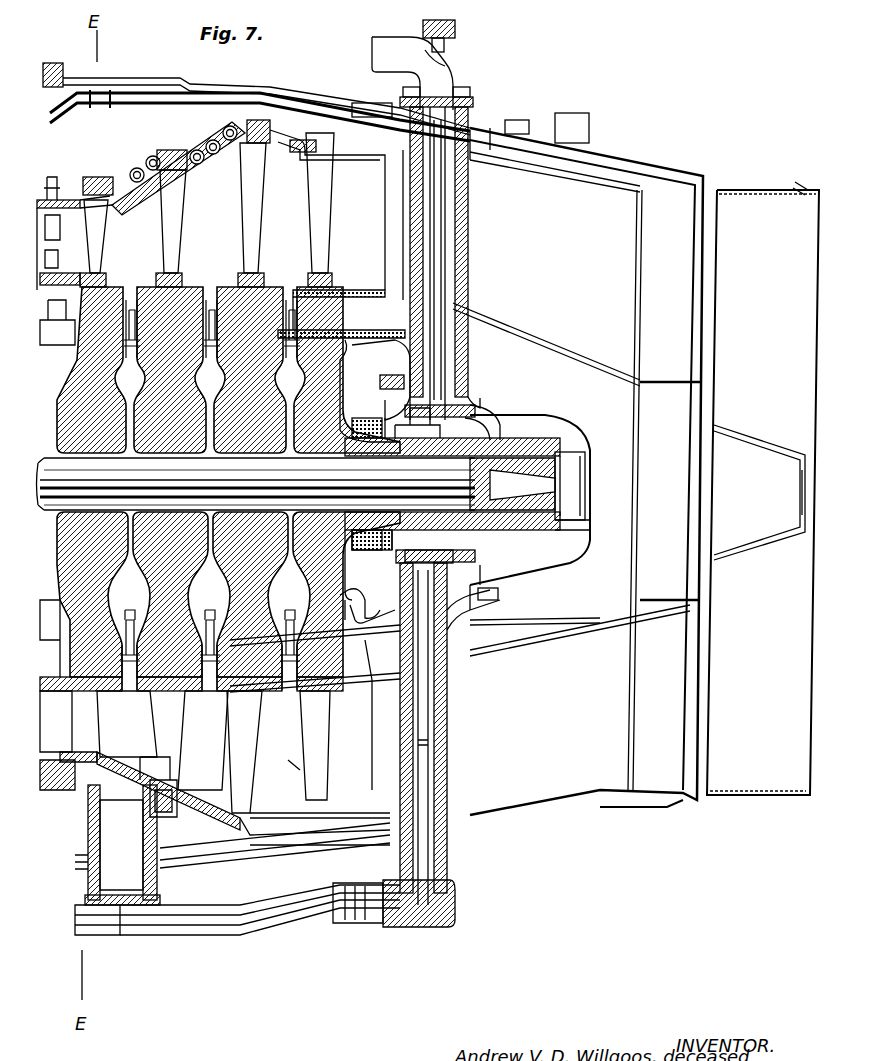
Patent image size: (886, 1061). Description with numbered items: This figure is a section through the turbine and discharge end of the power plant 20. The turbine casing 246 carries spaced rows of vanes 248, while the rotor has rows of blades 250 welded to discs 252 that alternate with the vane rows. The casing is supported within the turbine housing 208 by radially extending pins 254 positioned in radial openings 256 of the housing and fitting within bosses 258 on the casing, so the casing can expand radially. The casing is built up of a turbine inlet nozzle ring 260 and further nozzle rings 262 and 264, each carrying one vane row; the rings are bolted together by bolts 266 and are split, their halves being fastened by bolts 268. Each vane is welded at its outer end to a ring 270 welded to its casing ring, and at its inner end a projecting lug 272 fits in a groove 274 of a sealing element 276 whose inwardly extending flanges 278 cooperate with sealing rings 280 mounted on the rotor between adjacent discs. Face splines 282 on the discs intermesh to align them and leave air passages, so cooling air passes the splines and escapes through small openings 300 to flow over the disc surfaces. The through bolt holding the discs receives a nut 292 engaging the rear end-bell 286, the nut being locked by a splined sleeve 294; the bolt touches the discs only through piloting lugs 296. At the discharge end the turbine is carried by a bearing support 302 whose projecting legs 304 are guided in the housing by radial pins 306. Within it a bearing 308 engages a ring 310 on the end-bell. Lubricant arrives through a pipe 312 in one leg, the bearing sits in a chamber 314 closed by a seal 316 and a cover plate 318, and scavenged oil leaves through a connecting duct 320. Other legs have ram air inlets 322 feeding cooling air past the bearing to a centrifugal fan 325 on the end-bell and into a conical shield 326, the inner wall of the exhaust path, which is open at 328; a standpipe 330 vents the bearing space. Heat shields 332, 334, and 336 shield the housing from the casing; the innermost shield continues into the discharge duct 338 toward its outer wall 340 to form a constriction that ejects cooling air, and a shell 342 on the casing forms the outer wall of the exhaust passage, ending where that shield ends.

The gas turbine engine 20 is at (758, 806).
The turbine housing 208 is at (215, 84).
The turbine casing 246 is at (145, 154).
The vanes 248 is at (200, 207).
The blades 250 is at (185, 258).
The discs 252 is at (215, 290).
The radially extending pins 254 is at (110, 860).
The radial openings 256 is at (85, 898).
The bosses 258 is at (88, 832).
The turbine inlet nozzle ring 260 is at (55, 240).
The nozzle ring 262 is at (88, 800).
The nozzle ring 264 is at (215, 808).
The bolts 266 is at (178, 810).
The bolts 268 is at (118, 175).
The ring 270 is at (215, 172).
The projecting lug 272 is at (255, 716).
The groove 274 is at (255, 700).
The sealing element 276 is at (265, 672).
The inwardly extending flanges 278 is at (85, 700).
The sealing rings 280 is at (300, 650).
The face splines 282 is at (290, 318).
The end-bell 286 is at (340, 378).
The nut 292 is at (560, 462).
The splined sleeve 294 is at (540, 548).
The piloting lugs 296 is at (62, 462).
The small openings 300 is at (52, 345).
The bearing support 302 is at (455, 625).
The projecting legs 304 is at (470, 272).
The radial pins 306 is at (470, 208).
The bearing 308 is at (445, 430).
The ring 310 is at (470, 430).
The pipe 312 is at (450, 706).
The chamber 314 is at (560, 532).
The seal 316 is at (368, 550).
The cover plate 318 is at (586, 488).
The connecting duct 320 is at (262, 915).
The ram air inlets 322 is at (392, 45).
The centrifugal fan 325 is at (345, 605).
The conical shield 326 is at (540, 648).
The open downstream end 328 is at (802, 510).
The standpipe 330 is at (440, 56).
The heat shield 332 is at (252, 103).
The heat shield 334 is at (288, 113).
The heat shield 336 is at (345, 118).
The discharge duct 338 is at (740, 215).
The outer wall 340 is at (642, 168).
The shell 342 is at (562, 175).